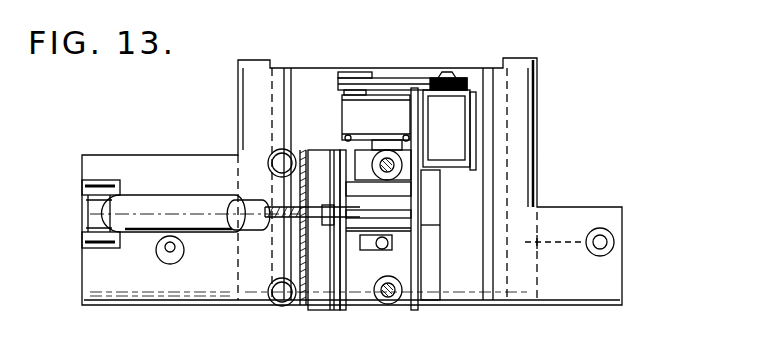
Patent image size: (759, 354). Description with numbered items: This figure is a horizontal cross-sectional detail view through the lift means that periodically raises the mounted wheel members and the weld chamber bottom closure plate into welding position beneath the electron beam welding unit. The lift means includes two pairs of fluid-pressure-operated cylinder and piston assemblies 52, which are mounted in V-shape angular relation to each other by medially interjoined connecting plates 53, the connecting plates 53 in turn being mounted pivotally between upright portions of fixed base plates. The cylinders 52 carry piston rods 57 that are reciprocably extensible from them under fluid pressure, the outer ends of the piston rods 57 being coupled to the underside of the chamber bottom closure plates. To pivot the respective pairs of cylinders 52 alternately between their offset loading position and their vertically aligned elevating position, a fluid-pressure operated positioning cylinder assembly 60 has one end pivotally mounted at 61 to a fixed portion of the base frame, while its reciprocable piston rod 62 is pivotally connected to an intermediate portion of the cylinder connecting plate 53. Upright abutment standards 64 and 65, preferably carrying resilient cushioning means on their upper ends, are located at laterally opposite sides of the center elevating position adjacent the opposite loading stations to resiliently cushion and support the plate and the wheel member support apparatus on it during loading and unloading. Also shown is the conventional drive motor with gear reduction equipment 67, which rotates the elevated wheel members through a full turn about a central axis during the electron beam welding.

The fluid-pressure-operated cylinder and piston assemblies 52 is at (268, 152).
The connecting plates 53 is at (363, 213).
The piston rods 57 is at (398, 163).
The positioning cylinder assembly 60 is at (188, 196).
The pivotal mounting 61 is at (78, 182).
The piston rod 62 is at (278, 196).
The upright abutment standard 64 is at (160, 255).
The upright abutment standard 65 is at (613, 230).
The drive motor and gear reduction equipment 67 is at (472, 90).